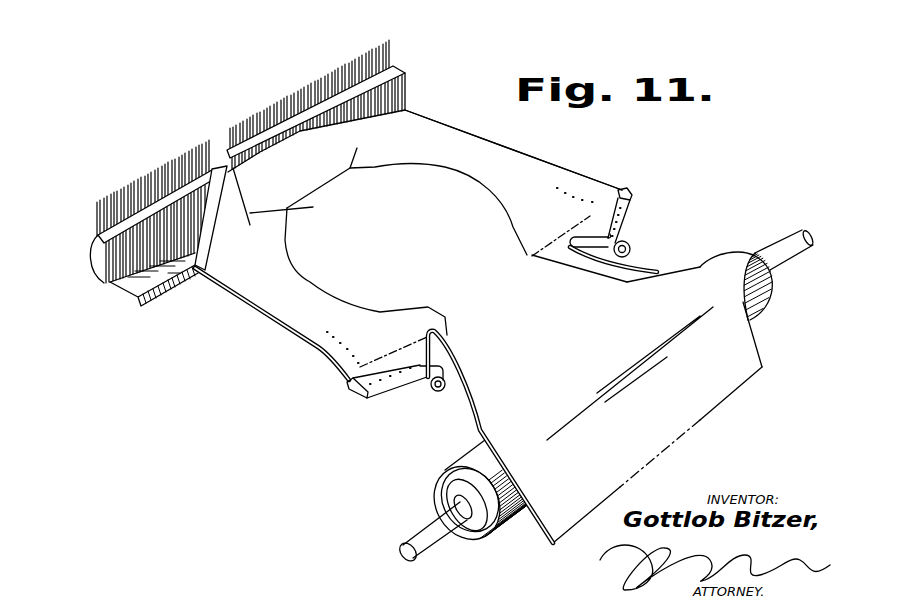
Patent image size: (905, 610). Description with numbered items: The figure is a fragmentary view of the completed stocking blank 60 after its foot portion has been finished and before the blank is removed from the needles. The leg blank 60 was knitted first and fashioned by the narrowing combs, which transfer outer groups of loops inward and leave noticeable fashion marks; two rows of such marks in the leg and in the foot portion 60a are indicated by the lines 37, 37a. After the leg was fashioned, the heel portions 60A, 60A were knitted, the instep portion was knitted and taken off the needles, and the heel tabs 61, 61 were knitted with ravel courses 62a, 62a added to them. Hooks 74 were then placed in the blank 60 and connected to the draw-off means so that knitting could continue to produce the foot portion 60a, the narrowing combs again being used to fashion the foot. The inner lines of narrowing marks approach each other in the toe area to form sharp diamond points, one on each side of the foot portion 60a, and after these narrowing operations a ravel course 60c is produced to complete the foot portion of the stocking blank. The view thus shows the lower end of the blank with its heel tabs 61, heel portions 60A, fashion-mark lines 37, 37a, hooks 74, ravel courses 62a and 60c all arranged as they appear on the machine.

The lines 37 is at (247, 186).
The comb teeth 37a is at (372, 148).
The leg blank 60 is at (737, 378).
The foot portion 60a is at (498, 157).
The ravel course 60c is at (208, 253).
The heel portions 60A is at (620, 273).
The heel tabs 61 is at (620, 220).
The ravel courses 62a is at (638, 195).
The hooks 74 is at (557, 279).